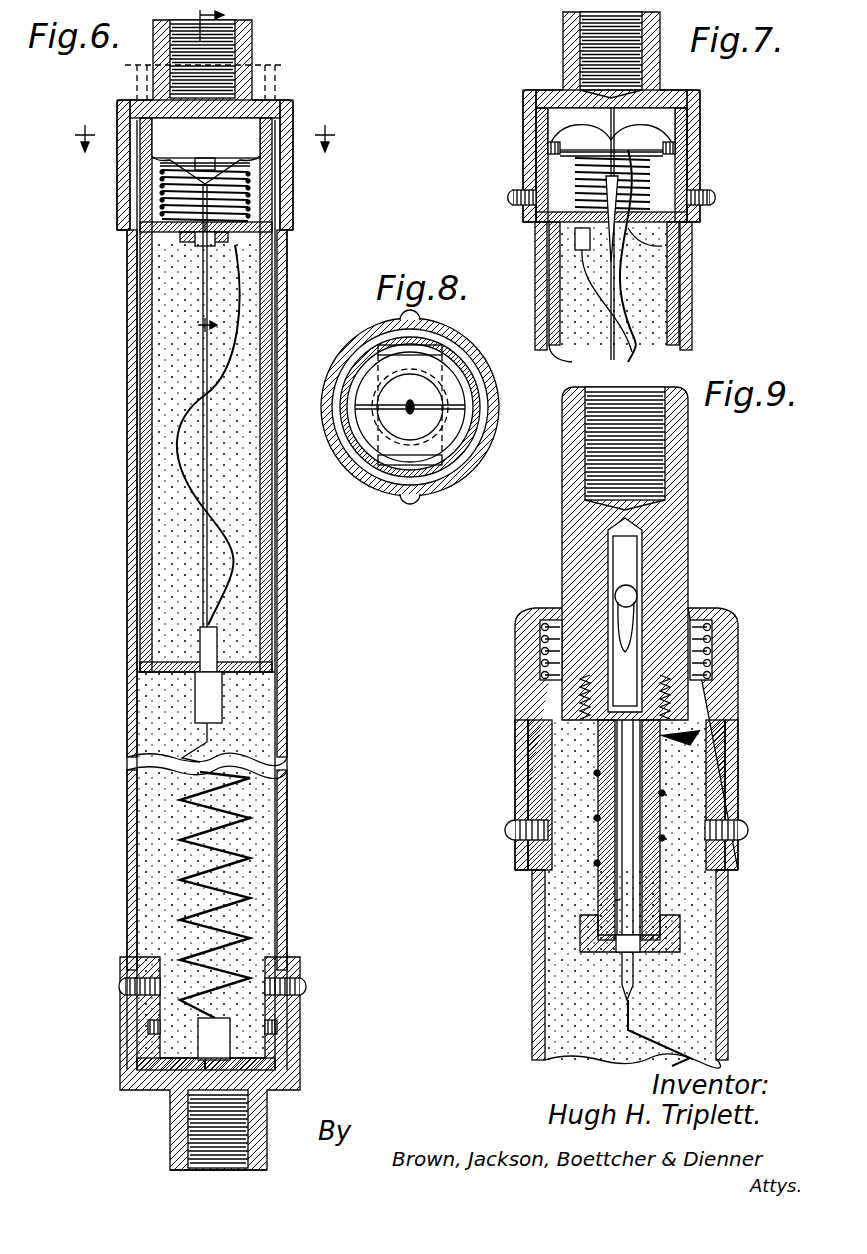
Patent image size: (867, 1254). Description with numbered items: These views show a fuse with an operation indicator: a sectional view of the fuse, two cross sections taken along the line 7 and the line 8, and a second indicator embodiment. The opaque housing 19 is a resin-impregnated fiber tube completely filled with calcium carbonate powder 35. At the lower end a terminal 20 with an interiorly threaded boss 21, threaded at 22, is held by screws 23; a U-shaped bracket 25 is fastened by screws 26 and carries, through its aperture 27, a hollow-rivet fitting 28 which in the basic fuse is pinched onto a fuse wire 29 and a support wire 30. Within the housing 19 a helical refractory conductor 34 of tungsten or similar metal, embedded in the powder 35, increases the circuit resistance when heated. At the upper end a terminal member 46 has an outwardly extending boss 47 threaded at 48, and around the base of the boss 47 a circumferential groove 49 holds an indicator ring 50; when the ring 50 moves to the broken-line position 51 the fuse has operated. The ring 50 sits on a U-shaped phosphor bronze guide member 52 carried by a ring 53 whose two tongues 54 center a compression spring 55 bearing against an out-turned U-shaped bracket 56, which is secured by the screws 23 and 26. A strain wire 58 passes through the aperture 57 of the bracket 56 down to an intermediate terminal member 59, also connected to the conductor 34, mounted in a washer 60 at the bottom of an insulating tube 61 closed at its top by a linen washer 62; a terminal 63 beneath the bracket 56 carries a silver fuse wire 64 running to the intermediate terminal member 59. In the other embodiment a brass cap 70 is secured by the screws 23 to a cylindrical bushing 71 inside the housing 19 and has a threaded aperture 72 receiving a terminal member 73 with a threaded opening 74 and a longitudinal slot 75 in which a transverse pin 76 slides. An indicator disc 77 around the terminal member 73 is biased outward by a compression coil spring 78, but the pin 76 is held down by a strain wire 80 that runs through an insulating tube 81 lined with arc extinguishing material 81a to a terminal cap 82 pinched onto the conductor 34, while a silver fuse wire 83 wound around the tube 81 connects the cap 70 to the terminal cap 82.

In FIG. 6, the section line 7— 7 is at (178, 174).
In FIG. 6, the section line 8— 8 is at (204, 138).
In FIG. 6, the housing 19 is at (288, 592).
In FIG. 7, the housing 19 is at (536, 280).
In FIG. 8, the housing 19 is at (482, 462).
In FIG. 9, the housing 19 is at (726, 1000).
In FIG. 6, the terminal 20 is at (302, 1037).
In FIG. 6, the boss 21 is at (186, 1122).
In FIG. 6, the interior threads 22 is at (186, 1146).
In FIG. 6, the screws 23 is at (120, 984).
In FIG. 7, the screws 23 is at (702, 196).
In FIG. 8, the screws 23 is at (398, 320).
In FIG. 9, the screws 23 is at (514, 820).
In FIG. 6, the U-shaped bracket 25 is at (276, 1062).
In FIG. 6, the screws 26 is at (150, 1024).
In FIG. 7, the screws 26 is at (546, 150).
In FIG. 6, the aperture 27 is at (130, 1088).
In FIG. 6, the fitting 28 is at (200, 1032).
In FIG. 9, the fuse wire 29 is at (540, 663).
In FIG. 6, the support wire 30 is at (268, 1072).
In FIG. 6, the conductor 34 is at (262, 810).
In FIG. 9, the conductor 34 is at (662, 1056).
In FIG. 6, the powder 35 is at (270, 740).
In FIG. 9, the powder 35 is at (690, 970).
In FIG. 6, the terminal member 46 is at (293, 118).
In FIG. 8, the terminal member 46 is at (470, 356).
In FIG. 6, the boss 47 is at (250, 46).
In FIG. 7, the boss 47 is at (566, 30).
In FIG. 6, the interior threads 48 is at (238, 33).
In FIG. 7, the interior threads 48 is at (592, 48).
In FIG. 6, the circumferential groove 49 is at (293, 102).
In FIG. 7, the circumferential groove 49 is at (524, 98).
In FIG. 6, the indicator ring 50 is at (270, 97).
In FIG. 7, the indicator ring 50 is at (662, 94).
In FIG. 6, the operated position of indicator ring 51 is at (127, 70).
In FIG. 6, the U-shaped guide member 52 is at (150, 152).
In FIG. 7, the U-shaped guide member 52 is at (612, 132).
In FIG. 8, the U-shaped guide member 52 is at (470, 400).
In FIG. 6, the ring 53 is at (160, 170).
In FIG. 7, the ring 53 is at (545, 132).
In FIG. 8, the ring 53 is at (462, 430).
In FIG. 6, the tongues 54 is at (165, 186).
In FIG. 7, the tongues 54 is at (572, 160).
In FIG. 6, the compression spring 55 is at (252, 190).
In FIG. 7, the compression spring 55 is at (532, 186).
In FIG. 8, the compression spring 55 is at (372, 375).
In FIG. 6, the U-shaped bracket 56 is at (178, 236).
In FIG. 7, the U-shaped bracket 56 is at (660, 228).
In FIG. 8, the U-shaped bracket 56 is at (422, 346).
In FIG. 6, the aperture 57 is at (268, 226).
In FIG. 7, the aperture 57 is at (630, 232).
In FIG. 6, the strain wire 58 is at (204, 372).
In FIG. 7, the strain wire 58 is at (614, 297).
In FIG. 6, the intermediate terminal member 59 is at (207, 642).
In FIG. 6, the washer 60 is at (168, 676).
In FIG. 6, the tube 61 is at (140, 650).
In FIG. 7, the tube 61 is at (614, 299).
In FIG. 6, the linen washer 62 is at (142, 218).
In FIG. 7, the linen washer 62 is at (670, 220).
In FIG. 8, the linen washer 62 is at (352, 468).
In FIG. 6, the terminal 63 is at (197, 242).
In FIG. 7, the terminal 63 is at (573, 242).
In FIG. 6, the fuse wire 64 is at (183, 452).
In FIG. 7, the fuse wire 64 is at (626, 334).
In FIG. 9, the cap 70 is at (520, 727).
In FIG. 9, the cylindrical bushing 71 is at (712, 776).
In FIG. 9, the threaded aperture 72 is at (672, 696).
In FIG. 9, the terminal member 73 is at (564, 540).
In FIG. 9, the threaded opening 74 is at (640, 395).
In FIG. 9, the longitudinal slot 75 is at (626, 548).
In FIG. 9, the transverse pin 76 is at (640, 590).
In FIG. 9, the indicator disc 77 is at (560, 610).
In FIG. 9, the compression coil spring 78 is at (712, 640).
In FIG. 9, the strain wire 80 is at (636, 890).
In FIG. 9, the tube 81 is at (600, 890).
In FIG. 9, the arc extinguishing material 81a is at (614, 900).
In FIG. 9, the terminal cap 82 is at (582, 942).
In FIG. 9, the fuse wire 83 is at (596, 772).